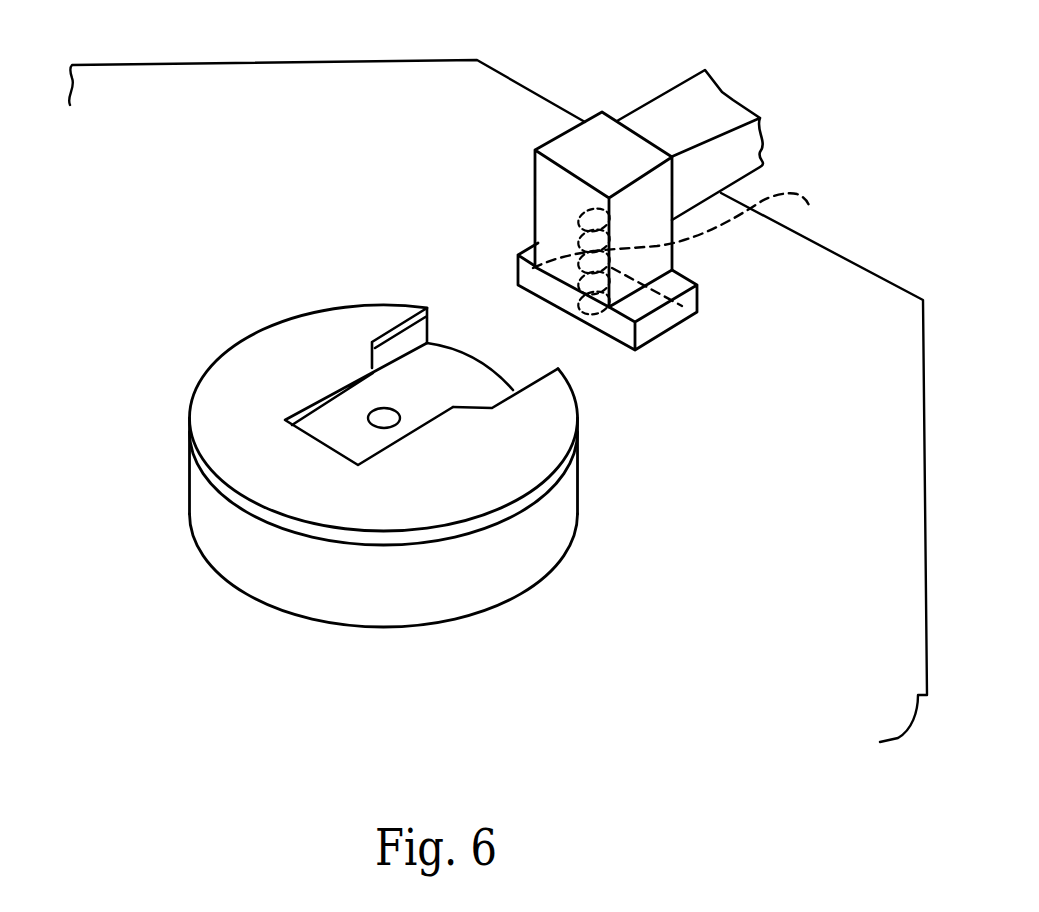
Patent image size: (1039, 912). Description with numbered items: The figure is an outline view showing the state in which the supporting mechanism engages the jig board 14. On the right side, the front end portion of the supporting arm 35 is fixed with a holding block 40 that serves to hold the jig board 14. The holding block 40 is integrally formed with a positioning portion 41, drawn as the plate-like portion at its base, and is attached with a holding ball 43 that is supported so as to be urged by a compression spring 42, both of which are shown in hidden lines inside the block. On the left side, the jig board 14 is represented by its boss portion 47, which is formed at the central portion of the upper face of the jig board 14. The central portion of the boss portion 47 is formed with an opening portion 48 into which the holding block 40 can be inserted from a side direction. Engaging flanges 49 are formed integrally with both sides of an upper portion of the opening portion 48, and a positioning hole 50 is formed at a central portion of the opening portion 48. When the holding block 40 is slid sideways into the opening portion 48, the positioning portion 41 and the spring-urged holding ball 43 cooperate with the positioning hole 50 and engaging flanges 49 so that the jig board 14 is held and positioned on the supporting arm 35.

The jig board 14 is at (868, 375).
The supporting arm 35 is at (717, 117).
The holding block 40 is at (587, 135).
The positioning portion 41 is at (697, 292).
The compression spring 42 is at (685, 248).
The holding ball 43 is at (603, 313).
The boss portion 47 is at (147, 375).
The opening portion 48 is at (445, 358).
The engaging flanges 49 is at (375, 360).
The positioning hole 50 is at (375, 427).